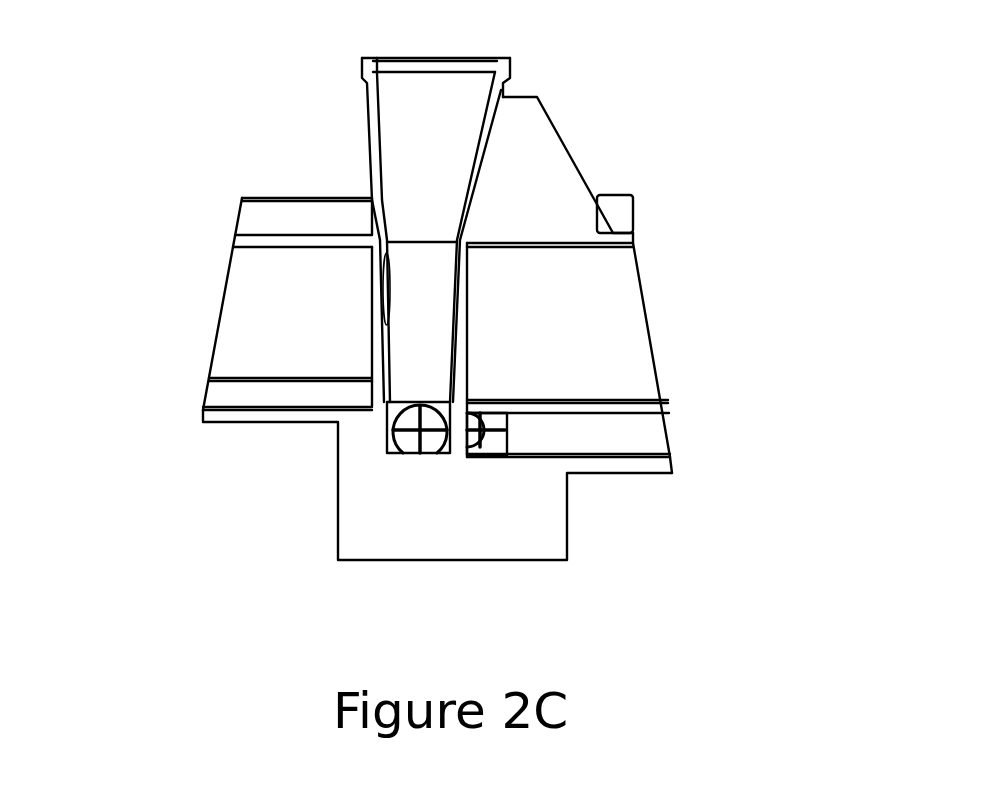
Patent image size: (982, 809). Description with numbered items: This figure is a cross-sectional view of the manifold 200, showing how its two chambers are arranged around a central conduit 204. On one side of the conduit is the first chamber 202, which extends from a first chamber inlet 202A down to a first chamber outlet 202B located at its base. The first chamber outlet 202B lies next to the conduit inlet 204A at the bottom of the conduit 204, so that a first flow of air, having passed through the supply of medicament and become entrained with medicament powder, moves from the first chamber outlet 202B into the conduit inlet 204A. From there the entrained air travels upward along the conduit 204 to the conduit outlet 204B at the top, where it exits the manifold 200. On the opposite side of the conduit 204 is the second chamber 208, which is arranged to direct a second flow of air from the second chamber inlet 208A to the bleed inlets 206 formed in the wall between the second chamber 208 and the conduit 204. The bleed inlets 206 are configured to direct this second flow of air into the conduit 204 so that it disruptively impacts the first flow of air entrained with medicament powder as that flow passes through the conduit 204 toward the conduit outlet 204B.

The manifold 200 is at (435, 295).
The right body / housing 202 is at (656, 307).
The housing sidewall 202A is at (656, 353).
The first chamber outlet 202B is at (610, 465).
The conduit 204 is at (360, 230).
The conduit inlet 204A is at (339, 450).
The conduit outlet 204B is at (344, 85).
The bleed inlets 206 is at (240, 252).
The second chamber 208 is at (348, 379).
The second chamber inlet 208A is at (198, 304).